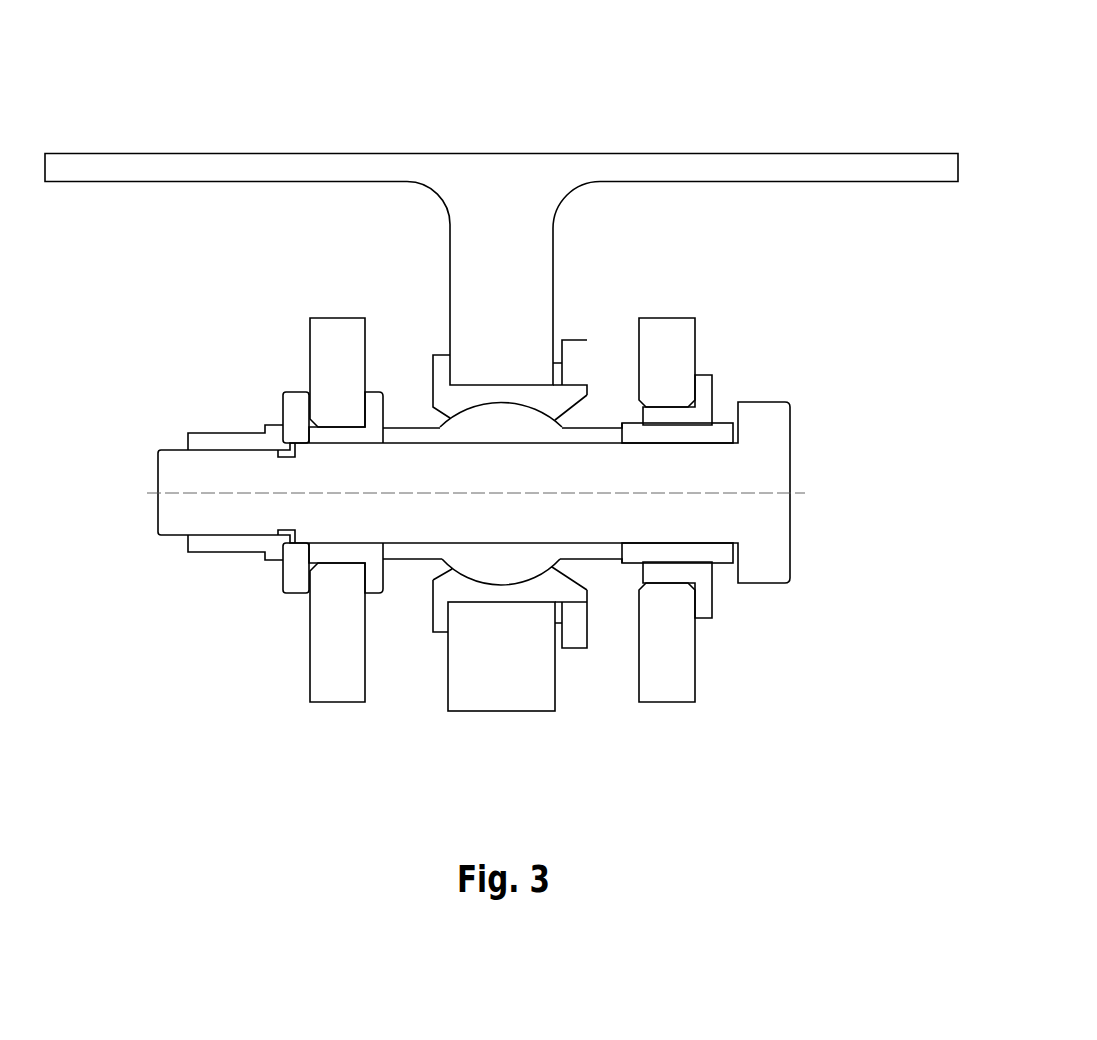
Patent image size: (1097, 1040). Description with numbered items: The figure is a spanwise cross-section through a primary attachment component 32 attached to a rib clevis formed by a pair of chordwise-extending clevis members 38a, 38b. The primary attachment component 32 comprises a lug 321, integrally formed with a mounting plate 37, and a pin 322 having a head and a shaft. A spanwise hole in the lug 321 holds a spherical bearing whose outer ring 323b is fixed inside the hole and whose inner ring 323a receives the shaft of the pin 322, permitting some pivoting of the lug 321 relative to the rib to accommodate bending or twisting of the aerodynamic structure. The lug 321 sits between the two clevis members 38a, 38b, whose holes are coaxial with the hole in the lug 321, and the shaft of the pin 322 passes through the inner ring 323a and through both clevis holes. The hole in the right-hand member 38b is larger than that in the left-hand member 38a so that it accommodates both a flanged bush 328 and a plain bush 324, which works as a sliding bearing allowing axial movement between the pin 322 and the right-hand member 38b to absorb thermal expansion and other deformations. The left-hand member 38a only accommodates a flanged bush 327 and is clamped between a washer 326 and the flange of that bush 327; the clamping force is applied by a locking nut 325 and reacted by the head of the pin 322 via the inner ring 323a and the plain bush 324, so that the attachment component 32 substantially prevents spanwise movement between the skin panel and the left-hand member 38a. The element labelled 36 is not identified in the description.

The primary attachment component 32 is at (195, 702).
The lug 321 is at (505, 305).
The pin 322 is at (190, 472).
The inner ring 323a is at (593, 548).
The outer ring 323b is at (550, 400).
The plain bush 324 is at (715, 428).
The locking nut 325 is at (205, 545).
The washer 326 is at (295, 417).
The flanged bush 327 is at (375, 583).
The flanged bush 328 is at (703, 585).
The motor 36 is at (509, 662).
The mounting plate 37 is at (733, 163).
The left-hand chordwise-extending member 38a is at (330, 347).
The right-hand chordwise-extending member 38b is at (683, 340).